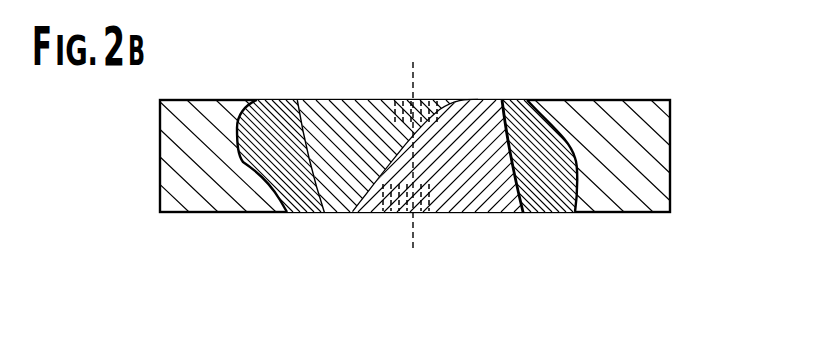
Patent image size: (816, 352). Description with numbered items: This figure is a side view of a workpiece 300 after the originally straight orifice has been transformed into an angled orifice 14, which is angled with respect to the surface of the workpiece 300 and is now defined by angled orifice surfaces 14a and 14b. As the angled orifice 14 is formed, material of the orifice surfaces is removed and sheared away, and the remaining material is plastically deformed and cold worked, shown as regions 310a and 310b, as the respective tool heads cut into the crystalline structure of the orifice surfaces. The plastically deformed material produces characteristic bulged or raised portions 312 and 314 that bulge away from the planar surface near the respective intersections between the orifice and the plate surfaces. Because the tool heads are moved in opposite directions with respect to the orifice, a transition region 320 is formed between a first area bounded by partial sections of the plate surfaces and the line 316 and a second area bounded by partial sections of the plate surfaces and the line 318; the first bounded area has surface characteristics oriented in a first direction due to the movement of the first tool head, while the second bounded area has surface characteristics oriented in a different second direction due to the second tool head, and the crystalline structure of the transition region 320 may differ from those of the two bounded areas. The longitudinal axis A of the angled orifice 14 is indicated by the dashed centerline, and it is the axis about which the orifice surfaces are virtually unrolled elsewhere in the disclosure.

The workpiece 300 is at (630, 147).
The plastically deformed and cold-worked region 310a is at (283, 160).
The plastically deformed and cold-worked region 310b is at (542, 157).
The bulged or raised portion 312 is at (292, 100).
The bulged or raised portion 314 is at (527, 212).
The line 316 is at (393, 172).
The line 318 is at (419, 155).
The transition region 320 is at (383, 203).
The angled orifice 14 is at (483, 92).
The angled orifice surface 14a is at (298, 100).
The angled orifice surface 14b is at (512, 188).
The longitudinal axis A is at (413, 72).